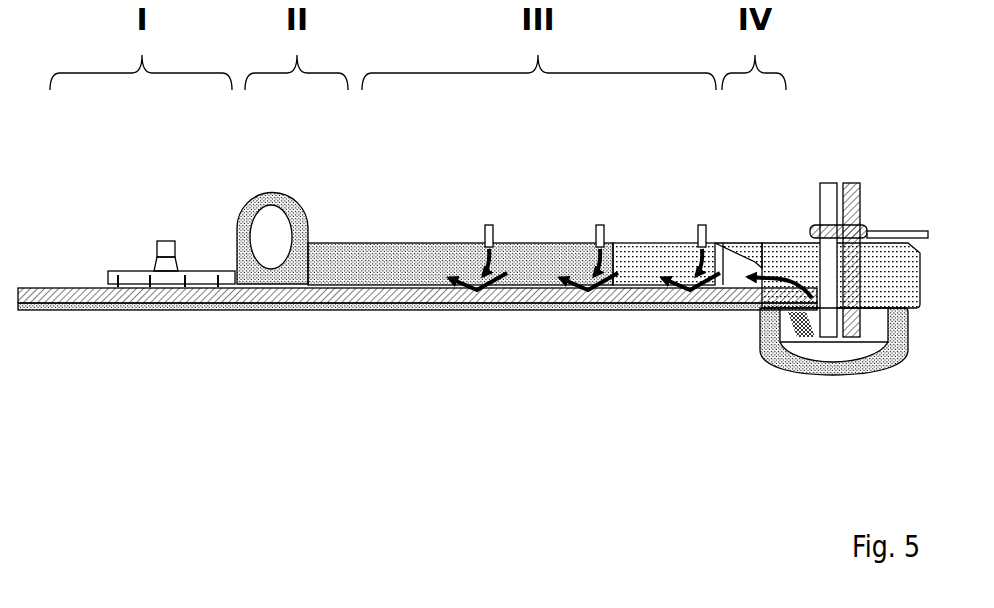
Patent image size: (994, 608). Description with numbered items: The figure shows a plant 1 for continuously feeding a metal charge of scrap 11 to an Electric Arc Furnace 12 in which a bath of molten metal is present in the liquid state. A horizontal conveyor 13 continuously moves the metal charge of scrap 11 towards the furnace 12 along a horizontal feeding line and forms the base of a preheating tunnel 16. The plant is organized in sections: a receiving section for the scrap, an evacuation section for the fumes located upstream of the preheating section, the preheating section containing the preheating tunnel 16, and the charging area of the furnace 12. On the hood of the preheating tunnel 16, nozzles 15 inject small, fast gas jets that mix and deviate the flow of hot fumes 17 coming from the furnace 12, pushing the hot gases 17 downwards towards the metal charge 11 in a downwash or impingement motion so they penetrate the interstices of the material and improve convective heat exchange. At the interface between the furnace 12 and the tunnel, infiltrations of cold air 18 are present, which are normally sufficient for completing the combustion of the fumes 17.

The plant 1 is at (438, 352).
The metal charge of scrap 11 is at (360, 303).
The Electric Arc Furnace 12 is at (785, 357).
The horizontal conveyor 13 is at (93, 303).
The nozzles 15 is at (488, 223).
The preheating tunnel 16 is at (557, 262).
The flow of fumes 17 is at (763, 287).
The infiltrations of cold air 18 is at (742, 268).